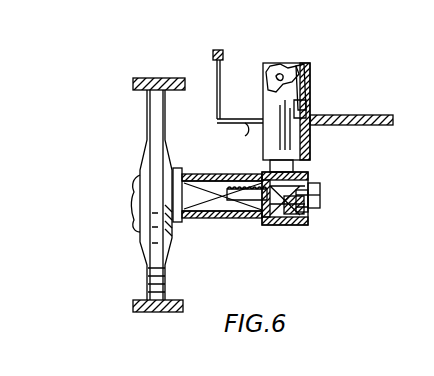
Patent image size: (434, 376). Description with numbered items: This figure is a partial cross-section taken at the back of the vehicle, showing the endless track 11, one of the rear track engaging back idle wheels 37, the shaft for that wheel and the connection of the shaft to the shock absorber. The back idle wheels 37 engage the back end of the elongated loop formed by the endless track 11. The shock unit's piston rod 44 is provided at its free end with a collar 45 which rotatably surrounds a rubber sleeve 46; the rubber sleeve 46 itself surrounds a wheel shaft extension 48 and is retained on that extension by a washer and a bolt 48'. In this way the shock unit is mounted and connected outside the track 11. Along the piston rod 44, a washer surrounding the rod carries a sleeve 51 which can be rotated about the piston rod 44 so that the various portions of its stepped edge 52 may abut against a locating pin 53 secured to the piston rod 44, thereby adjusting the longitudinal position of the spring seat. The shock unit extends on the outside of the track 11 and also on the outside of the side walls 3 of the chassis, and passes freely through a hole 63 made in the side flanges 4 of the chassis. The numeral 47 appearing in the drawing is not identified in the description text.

The side walls 3 is at (222, 56).
The side flanges 4 is at (380, 114).
The endless track 11 is at (187, 54).
The back idle wheels 37 is at (163, 272).
The piston rod 44 is at (287, 141).
The collar 45 is at (277, 226).
The rubber sleeve 46 is at (293, 223).
The plug 47 is at (306, 211).
The wheel shaft extension 48 is at (220, 216).
The bolt 48' is at (345, 190).
The sleeve 51 is at (312, 82).
The stepped edge 52 is at (312, 115).
The locating pin 53 is at (284, 67).
The hole 63 is at (245, 136).